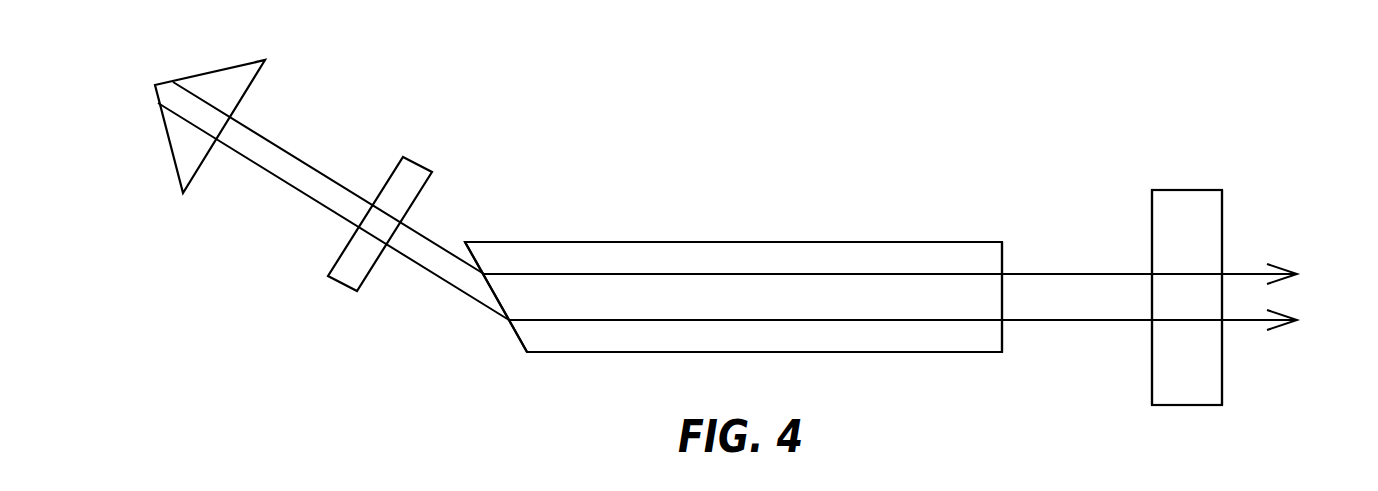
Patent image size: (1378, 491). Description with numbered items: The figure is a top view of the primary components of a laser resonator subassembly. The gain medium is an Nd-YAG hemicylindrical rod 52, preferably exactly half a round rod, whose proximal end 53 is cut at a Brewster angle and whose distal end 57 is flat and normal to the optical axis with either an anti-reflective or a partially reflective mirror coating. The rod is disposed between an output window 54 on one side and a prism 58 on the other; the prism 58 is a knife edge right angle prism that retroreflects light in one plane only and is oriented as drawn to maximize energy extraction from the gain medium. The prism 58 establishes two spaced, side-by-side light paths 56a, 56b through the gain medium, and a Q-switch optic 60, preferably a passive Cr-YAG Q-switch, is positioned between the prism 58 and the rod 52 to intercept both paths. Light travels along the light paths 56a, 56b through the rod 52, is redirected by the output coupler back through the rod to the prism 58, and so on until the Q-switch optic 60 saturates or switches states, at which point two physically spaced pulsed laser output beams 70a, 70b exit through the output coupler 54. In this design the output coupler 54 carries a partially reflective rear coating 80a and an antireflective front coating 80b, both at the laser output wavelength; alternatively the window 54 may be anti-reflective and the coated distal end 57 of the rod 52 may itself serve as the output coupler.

The hemicylindrical rod 52 is at (903, 242).
The proximal end 53 is at (517, 342).
The output window 54 is at (1197, 376).
The light path 56a is at (553, 272).
The light path 56b is at (563, 322).
The distal end 57 is at (1003, 253).
The prism 58 is at (172, 152).
The Q-switch optic 60 is at (365, 282).
The pulsed laser output beam 70a is at (1248, 270).
The pulsed laser output beam 70b is at (1248, 325).
The partially reflective rear coating 80a is at (1152, 203).
The antireflective front coating 80b is at (1222, 203).